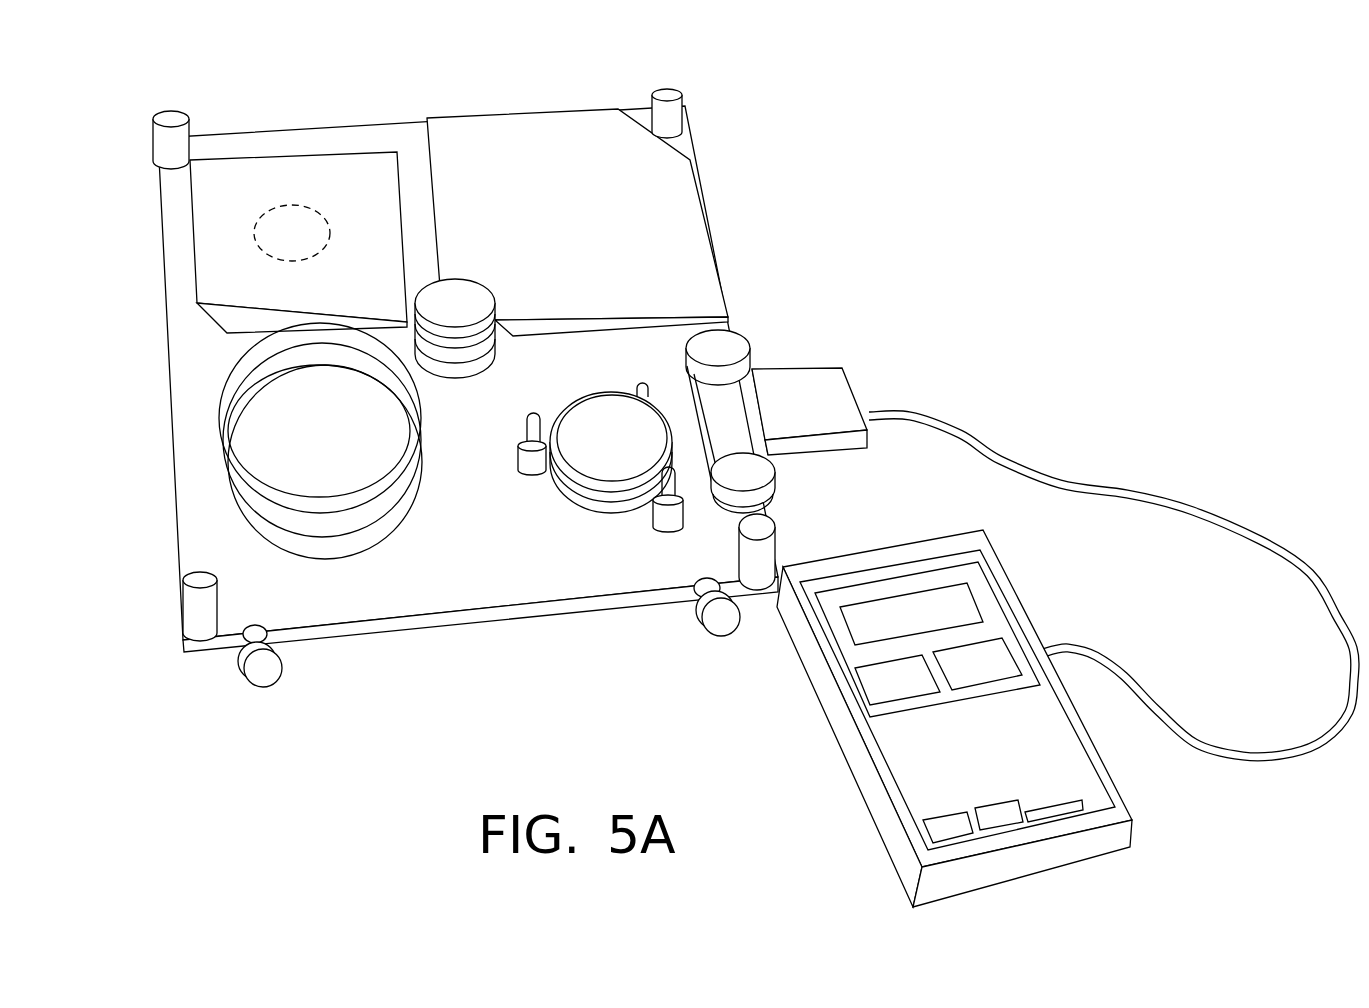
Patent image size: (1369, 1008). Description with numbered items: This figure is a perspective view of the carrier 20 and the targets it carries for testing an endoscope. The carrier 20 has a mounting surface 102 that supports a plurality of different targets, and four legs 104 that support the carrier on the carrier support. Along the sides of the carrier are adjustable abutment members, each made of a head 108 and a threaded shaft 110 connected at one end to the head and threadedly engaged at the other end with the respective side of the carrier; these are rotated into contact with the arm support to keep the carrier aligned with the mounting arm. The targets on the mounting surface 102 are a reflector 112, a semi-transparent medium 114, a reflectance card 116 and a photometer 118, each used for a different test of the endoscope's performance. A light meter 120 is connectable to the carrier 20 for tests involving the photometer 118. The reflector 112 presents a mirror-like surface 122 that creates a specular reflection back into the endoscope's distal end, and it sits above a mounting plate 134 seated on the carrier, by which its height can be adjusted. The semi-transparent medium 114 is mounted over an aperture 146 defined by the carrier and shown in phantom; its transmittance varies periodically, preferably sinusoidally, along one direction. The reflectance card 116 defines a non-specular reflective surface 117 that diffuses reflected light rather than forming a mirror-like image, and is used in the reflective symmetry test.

The carrier 20 is at (736, 481).
The mounting surface 102 is at (550, 578).
The legs 104 is at (177, 138).
The head 108 is at (265, 672).
The threaded shaft 110 is at (692, 602).
The reflector 112 is at (353, 469).
The semi-transparent medium 114 is at (298, 204).
The reflectance card 116 is at (602, 201).
The non-specular reflective surface 117 is at (507, 153).
The photometer 118 is at (610, 472).
The light meter 120 is at (858, 767).
The mirror-like surface 122 is at (372, 417).
The mounting plate 134 is at (316, 548).
The aperture 146 is at (320, 218).